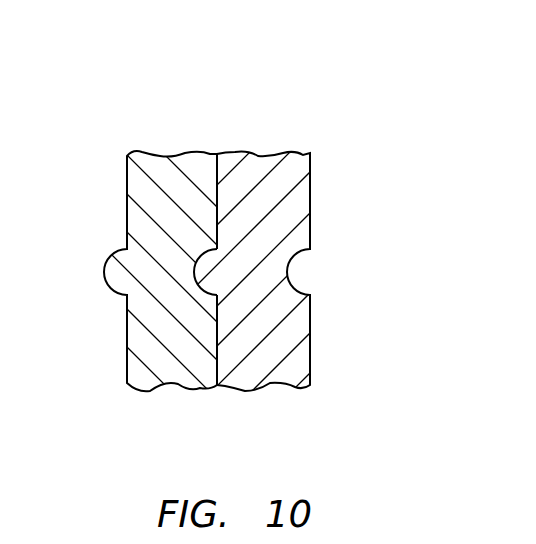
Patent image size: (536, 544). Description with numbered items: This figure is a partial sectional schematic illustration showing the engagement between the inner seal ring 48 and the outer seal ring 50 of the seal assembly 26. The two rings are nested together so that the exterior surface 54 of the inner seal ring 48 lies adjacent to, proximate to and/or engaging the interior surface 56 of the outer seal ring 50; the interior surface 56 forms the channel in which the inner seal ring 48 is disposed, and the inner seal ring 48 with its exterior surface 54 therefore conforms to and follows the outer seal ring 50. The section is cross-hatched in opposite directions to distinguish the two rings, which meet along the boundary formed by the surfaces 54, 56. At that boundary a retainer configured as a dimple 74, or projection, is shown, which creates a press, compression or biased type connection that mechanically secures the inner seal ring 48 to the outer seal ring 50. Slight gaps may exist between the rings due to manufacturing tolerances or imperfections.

The panel assembly 26 is at (268, 261).
The inner seal ring 48 is at (127, 346).
The outer seal ring 50 is at (310, 308).
The exterior surface 54 is at (218, 368).
The interior surface 56 is at (217, 186).
The dimple 74 is at (207, 248).